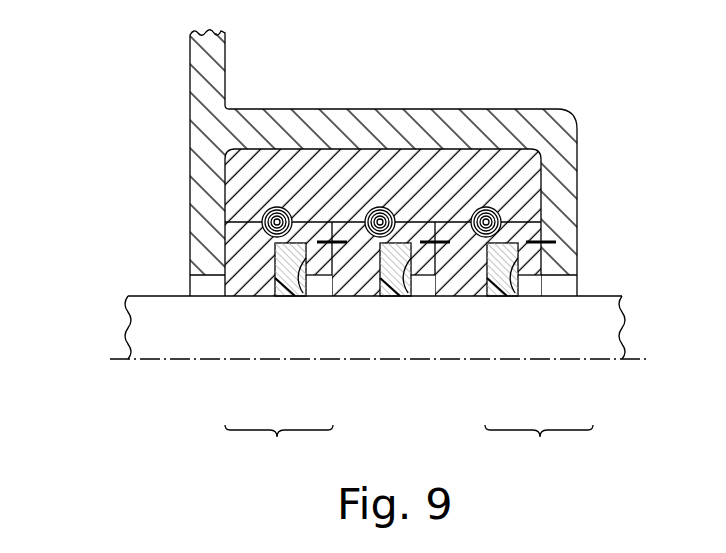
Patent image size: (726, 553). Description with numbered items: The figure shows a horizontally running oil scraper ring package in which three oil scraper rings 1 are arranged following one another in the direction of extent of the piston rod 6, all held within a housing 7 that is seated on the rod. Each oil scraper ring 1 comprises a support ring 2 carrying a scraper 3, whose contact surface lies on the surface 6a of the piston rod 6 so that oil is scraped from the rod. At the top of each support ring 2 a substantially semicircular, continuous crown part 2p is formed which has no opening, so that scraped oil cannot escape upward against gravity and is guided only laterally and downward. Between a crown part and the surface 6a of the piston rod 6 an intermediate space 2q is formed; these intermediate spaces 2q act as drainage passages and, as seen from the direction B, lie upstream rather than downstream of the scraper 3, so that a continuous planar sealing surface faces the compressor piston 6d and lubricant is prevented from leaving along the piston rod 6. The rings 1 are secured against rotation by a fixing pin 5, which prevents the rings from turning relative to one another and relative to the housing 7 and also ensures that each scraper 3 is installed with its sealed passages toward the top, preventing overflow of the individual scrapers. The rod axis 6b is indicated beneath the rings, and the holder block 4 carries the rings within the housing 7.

The oil scraper ring 1 is at (500, 39).
The support ring 2 is at (262, 278).
The crown part 2p is at (315, 257).
The intermediate space 2q is at (320, 288).
The scraper 3 is at (294, 292).
The holder block 4 is at (270, 207).
The fixing pin 5 is at (318, 242).
The piston rod 6 is at (607, 333).
The surface of the piston rod 6a is at (148, 288).
The center line of base plate 6b is at (603, 360).
The compressor piston 6d is at (22, 254).
The housing 7 is at (513, 123).
The direction B is at (626, 235).